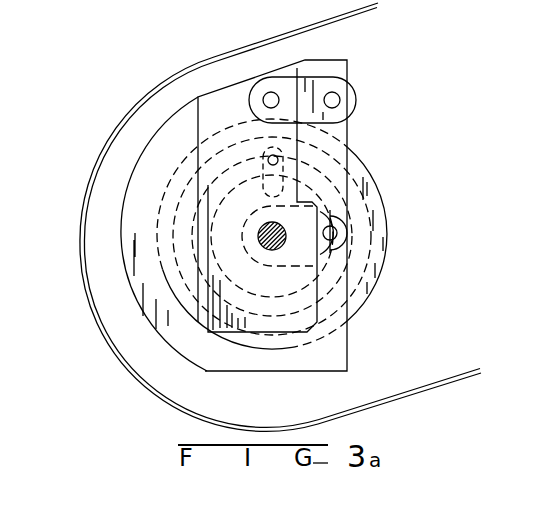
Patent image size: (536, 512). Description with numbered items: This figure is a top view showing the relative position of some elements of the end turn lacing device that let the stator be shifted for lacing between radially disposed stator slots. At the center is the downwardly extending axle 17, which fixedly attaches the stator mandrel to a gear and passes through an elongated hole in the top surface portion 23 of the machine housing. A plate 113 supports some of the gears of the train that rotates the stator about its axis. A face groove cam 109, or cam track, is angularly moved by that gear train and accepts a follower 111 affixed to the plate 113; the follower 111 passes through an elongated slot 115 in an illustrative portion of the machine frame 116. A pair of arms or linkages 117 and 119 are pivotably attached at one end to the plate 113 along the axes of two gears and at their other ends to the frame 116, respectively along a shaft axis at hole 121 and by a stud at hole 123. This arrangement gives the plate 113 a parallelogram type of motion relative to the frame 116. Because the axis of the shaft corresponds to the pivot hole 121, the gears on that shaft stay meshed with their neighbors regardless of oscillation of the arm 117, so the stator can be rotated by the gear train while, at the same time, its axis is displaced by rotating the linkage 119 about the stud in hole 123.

The top surface portion 23 is at (120, 161).
The machine frame 116 is at (128, 257).
The plate 113 is at (258, 322).
The face groove cam 109 is at (350, 208).
The elongated slot 115 is at (345, 139).
The follower 111 is at (353, 156).
The arm 117 is at (318, 77).
The hole 121 is at (334, 101).
The hole 123 is at (330, 233).
The linkage 119 is at (362, 303).
The axle 17 is at (268, 246).